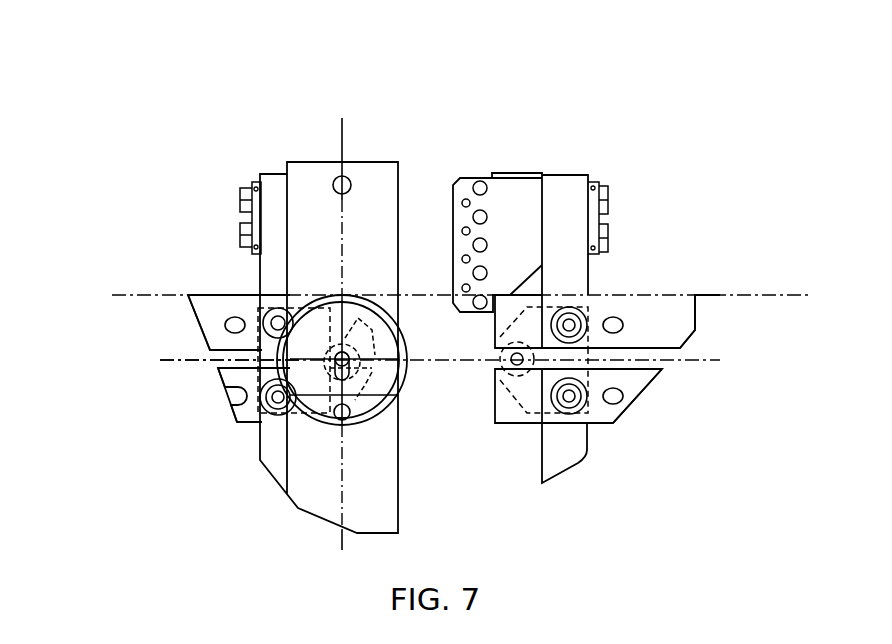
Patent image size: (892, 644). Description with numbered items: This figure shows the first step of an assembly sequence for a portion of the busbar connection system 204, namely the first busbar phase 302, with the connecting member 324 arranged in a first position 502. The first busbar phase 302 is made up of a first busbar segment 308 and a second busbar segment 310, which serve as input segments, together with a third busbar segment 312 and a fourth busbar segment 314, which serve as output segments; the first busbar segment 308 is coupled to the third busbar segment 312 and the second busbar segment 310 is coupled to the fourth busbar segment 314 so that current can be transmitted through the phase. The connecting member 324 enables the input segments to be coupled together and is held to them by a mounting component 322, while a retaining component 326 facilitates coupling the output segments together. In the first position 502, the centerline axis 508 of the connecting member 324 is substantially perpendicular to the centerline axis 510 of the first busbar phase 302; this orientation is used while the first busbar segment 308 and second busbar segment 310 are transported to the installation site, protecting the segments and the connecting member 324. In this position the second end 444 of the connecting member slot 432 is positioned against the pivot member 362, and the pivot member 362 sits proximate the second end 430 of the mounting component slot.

The busbar connection system 204 is at (285, 285).
The first position 502 is at (613, 260).
The centerline axis 508 is at (340, 150).
The centerline axis 510 is at (457, 365).
The connecting member 324 is at (376, 178).
The second end 444 is at (335, 296).
The first busbar segment 308 is at (207, 302).
The second busbar segment 310 is at (243, 423).
The mounting component 322 is at (300, 413).
The connecting member slot 432 is at (372, 349).
The pivot member 362 is at (364, 345).
The second end 430 is at (348, 418).
The first busbar phase 302 is at (84, 360).
The third busbar segment 312 is at (662, 307).
The fourth busbar segment 314 is at (612, 417).
The retaining component 326 is at (508, 412).